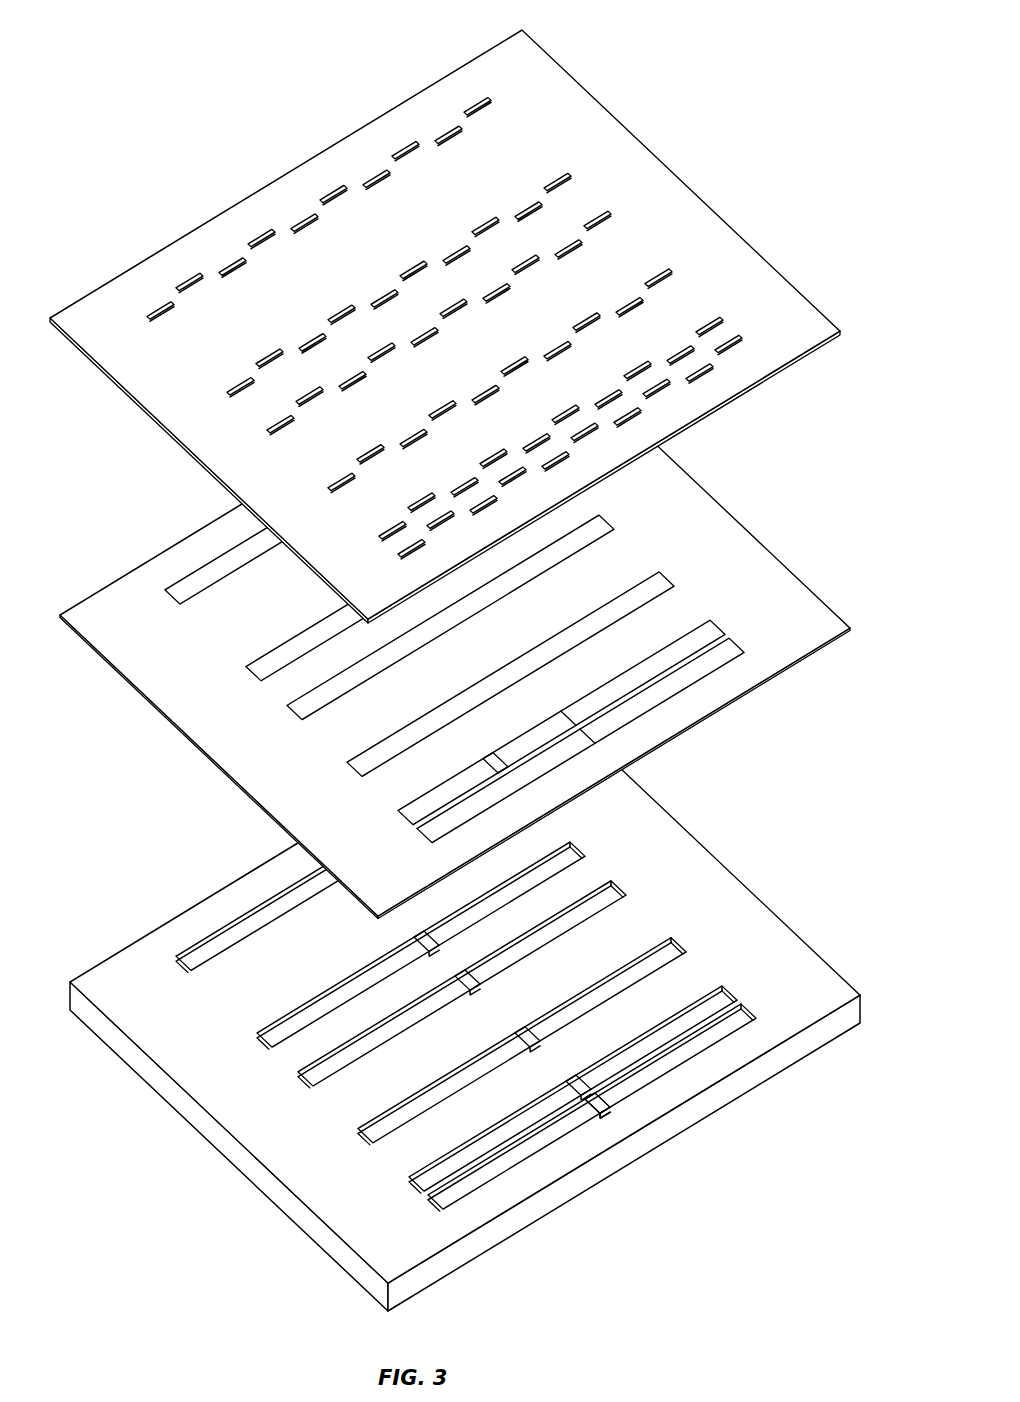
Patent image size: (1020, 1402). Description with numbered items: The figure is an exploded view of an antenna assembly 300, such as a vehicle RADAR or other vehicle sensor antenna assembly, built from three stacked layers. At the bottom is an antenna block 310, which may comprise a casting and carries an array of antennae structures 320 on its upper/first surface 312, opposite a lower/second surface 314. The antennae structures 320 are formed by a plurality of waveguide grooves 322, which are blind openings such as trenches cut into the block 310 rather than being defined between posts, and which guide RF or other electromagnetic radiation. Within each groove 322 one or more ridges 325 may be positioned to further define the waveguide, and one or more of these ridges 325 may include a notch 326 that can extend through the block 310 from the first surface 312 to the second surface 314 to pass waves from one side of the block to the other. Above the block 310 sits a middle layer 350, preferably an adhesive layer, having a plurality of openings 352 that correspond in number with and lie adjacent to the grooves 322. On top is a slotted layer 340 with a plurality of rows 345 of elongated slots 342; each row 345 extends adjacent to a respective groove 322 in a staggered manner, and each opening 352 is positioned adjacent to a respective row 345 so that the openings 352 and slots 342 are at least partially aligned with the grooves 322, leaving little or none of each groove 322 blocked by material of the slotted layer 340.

The antenna assembly 300 is at (699, 101).
The antenna block 310 is at (782, 930).
The upper/first surface 312 is at (826, 970).
The lower/second surface 314 is at (782, 1078).
The antennae structures 320 is at (623, 875).
The waveguide groove 322 is at (265, 1025).
The ridge 325 is at (670, 944).
The notch 326 is at (604, 1116).
The slotted layer 340 is at (770, 292).
The slot 342 is at (487, 87).
The row of slots 345 is at (590, 160).
The adhesive layer 350 is at (808, 617).
The opening 352 is at (616, 601).